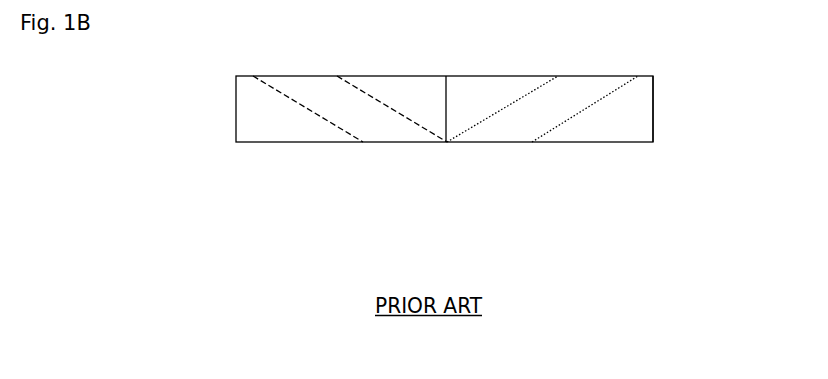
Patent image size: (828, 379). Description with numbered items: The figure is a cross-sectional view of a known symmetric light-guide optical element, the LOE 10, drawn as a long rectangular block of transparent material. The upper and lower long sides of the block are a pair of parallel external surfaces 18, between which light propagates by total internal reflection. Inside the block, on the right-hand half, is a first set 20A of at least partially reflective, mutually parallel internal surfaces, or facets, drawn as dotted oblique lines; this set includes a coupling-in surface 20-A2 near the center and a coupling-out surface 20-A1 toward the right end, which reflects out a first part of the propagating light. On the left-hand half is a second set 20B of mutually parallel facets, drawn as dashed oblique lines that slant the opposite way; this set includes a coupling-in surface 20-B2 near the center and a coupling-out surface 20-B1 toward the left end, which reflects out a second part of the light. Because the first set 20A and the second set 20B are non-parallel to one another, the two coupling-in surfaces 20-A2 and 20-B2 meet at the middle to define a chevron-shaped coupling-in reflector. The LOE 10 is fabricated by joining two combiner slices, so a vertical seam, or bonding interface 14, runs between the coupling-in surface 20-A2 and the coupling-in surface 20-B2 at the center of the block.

The symmetric LOE 10 is at (202, 108).
The seam (bonding interface) 14 is at (446, 107).
The parallel external surfaces 18 is at (650, 77).
The first set of internal surfaces 20A is at (551, 123).
The second set of internal surfaces 20B is at (342, 123).
The coupling-out surface 20-A1 is at (550, 140).
The coupling-in surface 20-A2 is at (465, 135).
The coupling-out surface 20-B1 is at (340, 133).
The coupling-in surface 20-B2 is at (428, 137).